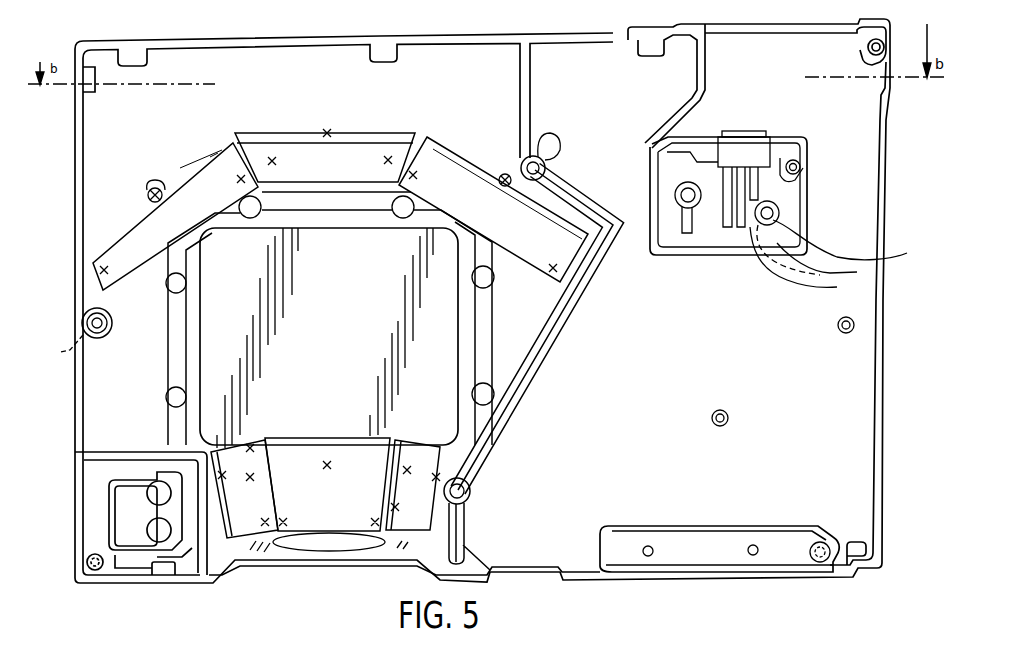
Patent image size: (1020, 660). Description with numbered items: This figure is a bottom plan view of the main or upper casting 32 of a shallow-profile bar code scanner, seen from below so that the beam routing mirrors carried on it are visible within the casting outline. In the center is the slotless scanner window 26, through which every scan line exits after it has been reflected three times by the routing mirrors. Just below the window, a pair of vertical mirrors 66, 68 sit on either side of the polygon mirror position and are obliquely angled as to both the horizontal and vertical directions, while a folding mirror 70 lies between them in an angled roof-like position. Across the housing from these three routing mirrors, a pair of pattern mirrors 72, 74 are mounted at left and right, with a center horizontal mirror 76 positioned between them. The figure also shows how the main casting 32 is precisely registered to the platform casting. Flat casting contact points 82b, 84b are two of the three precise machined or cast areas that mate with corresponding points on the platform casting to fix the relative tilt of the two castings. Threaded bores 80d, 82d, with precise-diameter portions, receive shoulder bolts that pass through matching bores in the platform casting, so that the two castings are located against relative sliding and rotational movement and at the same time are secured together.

The scanner window 26 is at (323, 315).
The main casting 32 is at (887, 520).
The vertical mirror 66 is at (237, 448).
The vertical mirror 68 is at (422, 448).
The folding mirror 70 is at (297, 448).
The pattern mirror 72 is at (143, 234).
The pattern mirror 74 is at (524, 237).
The center horizontal mirror 76 is at (371, 134).
The threaded bore 80d is at (536, 156).
The casting contact point 82b is at (471, 489).
The threaded bore 82d is at (468, 504).
The casting contact point 84b is at (547, 167).